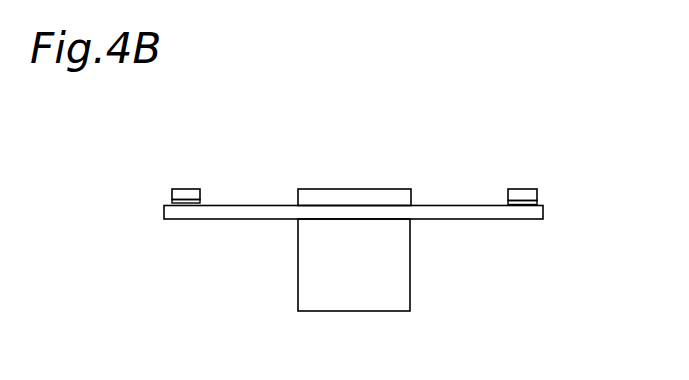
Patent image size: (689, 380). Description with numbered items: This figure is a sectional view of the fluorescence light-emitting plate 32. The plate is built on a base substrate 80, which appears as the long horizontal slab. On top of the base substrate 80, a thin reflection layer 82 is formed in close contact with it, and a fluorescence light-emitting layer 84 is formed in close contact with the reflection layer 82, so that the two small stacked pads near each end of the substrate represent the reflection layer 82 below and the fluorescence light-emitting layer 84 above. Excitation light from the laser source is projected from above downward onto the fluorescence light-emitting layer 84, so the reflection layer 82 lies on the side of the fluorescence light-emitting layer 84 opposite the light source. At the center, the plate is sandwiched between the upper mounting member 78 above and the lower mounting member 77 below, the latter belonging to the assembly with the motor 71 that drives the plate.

The fluorescence light-emitting plate 32 is at (547, 212).
The motor 71 is at (445, 292).
The lower mounting member 77 is at (399, 250).
The upper mounting member 78 is at (383, 189).
The base substrate 80 is at (229, 212).
The reflection layer 82 is at (170, 202).
The fluorescence light-emitting layer 84 is at (183, 196).